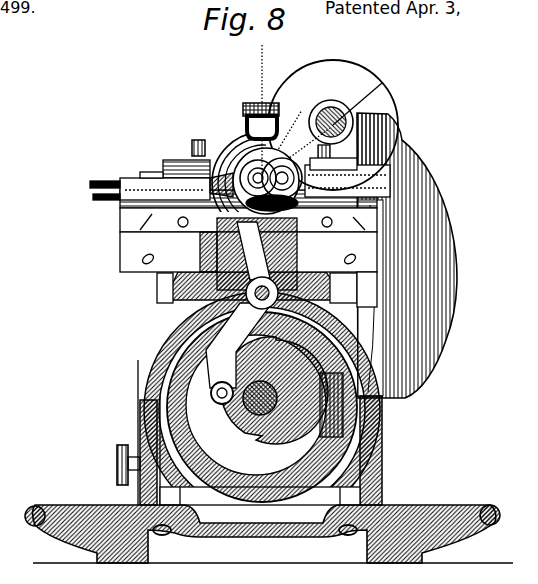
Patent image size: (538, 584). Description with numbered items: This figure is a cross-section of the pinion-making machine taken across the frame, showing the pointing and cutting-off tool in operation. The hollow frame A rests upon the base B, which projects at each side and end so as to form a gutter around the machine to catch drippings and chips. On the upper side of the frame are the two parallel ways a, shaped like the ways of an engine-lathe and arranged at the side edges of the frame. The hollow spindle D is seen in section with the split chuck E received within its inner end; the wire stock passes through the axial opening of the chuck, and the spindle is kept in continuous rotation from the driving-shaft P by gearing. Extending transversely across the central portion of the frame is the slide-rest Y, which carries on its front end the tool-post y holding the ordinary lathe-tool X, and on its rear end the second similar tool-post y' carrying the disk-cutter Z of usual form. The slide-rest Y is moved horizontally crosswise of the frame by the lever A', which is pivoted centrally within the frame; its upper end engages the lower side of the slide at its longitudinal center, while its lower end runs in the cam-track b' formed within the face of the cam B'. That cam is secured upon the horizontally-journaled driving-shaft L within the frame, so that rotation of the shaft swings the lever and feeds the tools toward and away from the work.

The hollow frame A is at (293, 320).
The lever A' is at (255, 208).
The base B is at (269, 534).
The cam B' is at (119, 445).
The hollow spindle D is at (261, 111).
The split chuck E is at (262, 173).
The driving-shaft L is at (284, 440).
The driving-shaft P is at (333, 125).
The lathe-tool X is at (213, 155).
The slide-rest Y is at (248, 263).
The disk-cutter Z is at (298, 131).
The ways a is at (256, 289).
The cam-track b' is at (239, 377).
The tool-post y is at (150, 173).
The tool-post y' is at (372, 105).